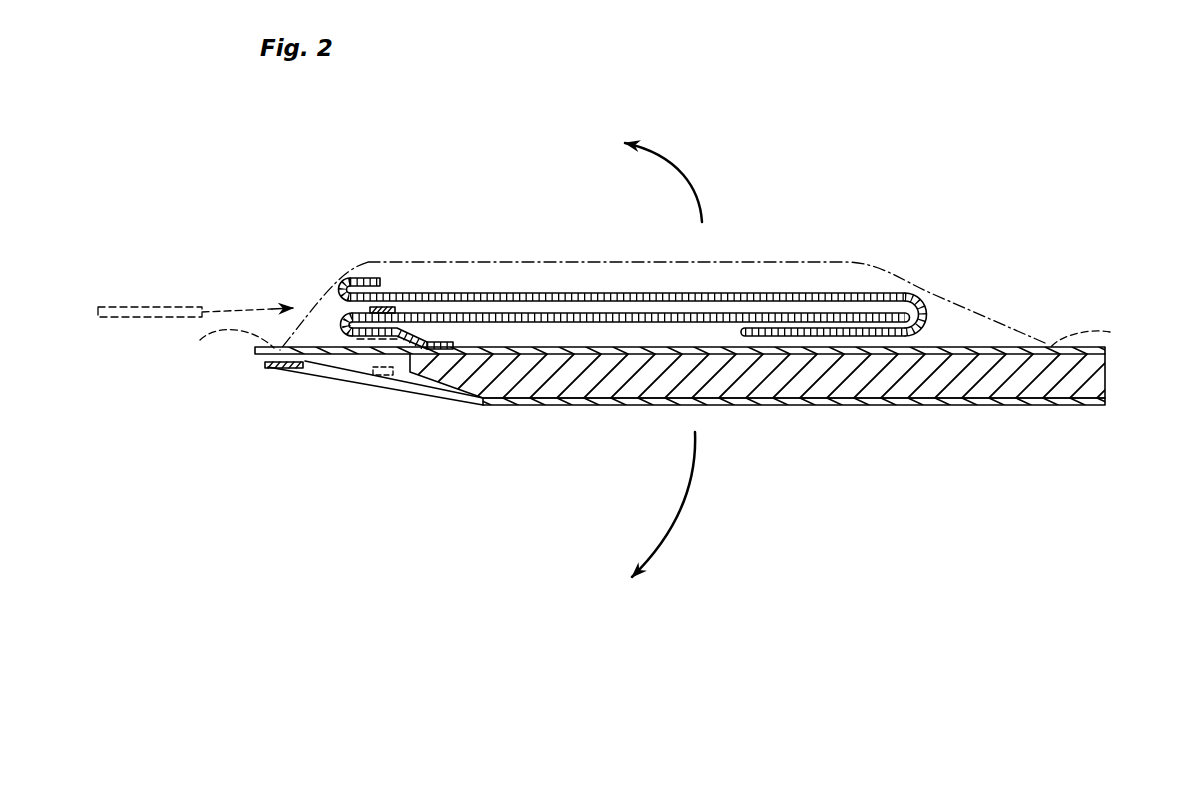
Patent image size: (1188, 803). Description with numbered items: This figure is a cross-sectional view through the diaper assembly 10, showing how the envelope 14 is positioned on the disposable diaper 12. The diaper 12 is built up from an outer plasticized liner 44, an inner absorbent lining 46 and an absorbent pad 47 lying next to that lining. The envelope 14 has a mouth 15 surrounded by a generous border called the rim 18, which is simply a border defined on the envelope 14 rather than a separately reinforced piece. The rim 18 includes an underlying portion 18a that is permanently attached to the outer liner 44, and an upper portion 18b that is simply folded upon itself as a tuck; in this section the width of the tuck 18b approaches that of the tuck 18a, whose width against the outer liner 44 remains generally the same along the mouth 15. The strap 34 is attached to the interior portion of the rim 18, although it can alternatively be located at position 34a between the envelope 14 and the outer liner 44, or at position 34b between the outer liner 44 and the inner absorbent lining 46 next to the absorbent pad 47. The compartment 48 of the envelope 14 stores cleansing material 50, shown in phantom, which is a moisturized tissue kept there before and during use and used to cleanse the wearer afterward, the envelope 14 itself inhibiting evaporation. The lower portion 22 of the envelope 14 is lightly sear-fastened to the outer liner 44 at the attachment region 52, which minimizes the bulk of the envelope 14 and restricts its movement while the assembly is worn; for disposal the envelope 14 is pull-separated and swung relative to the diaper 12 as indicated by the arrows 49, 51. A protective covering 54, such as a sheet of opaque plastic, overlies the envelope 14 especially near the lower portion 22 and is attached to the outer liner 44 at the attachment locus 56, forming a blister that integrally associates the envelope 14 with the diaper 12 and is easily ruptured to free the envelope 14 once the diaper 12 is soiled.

The diaper assembly 10 is at (1062, 135).
The disposable diaper 12 is at (713, 397).
The envelope 14 is at (933, 280).
The mouth 15 is at (310, 305).
The rim 18 is at (628, 326).
The underlying portion 18a is at (440, 337).
The upper portion 18b is at (373, 277).
The lower portion 22 is at (812, 332).
The strap 34 is at (368, 311).
The position 34a is at (287, 372).
The position 34b is at (375, 376).
The outer liner 44 is at (1107, 352).
The inner absorbent lining 46 is at (608, 406).
The absorbent pad 47 is at (896, 400).
The compartment 48 is at (533, 307).
The arrow 49 is at (692, 470).
The cleansing material 50 is at (100, 307).
The arrow 51 is at (697, 184).
The attachment region 52 is at (935, 342).
The protective covering 54 is at (746, 262).
The attachment locus 56 is at (662, 338).